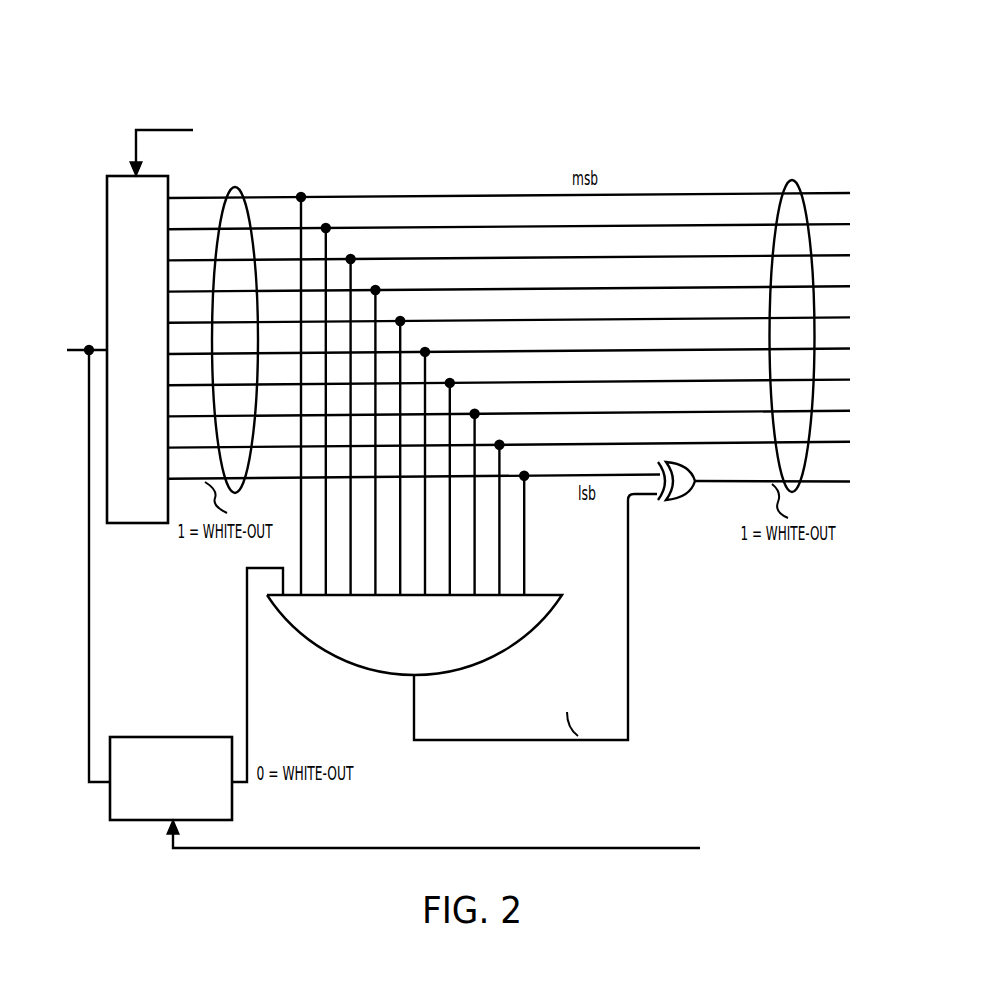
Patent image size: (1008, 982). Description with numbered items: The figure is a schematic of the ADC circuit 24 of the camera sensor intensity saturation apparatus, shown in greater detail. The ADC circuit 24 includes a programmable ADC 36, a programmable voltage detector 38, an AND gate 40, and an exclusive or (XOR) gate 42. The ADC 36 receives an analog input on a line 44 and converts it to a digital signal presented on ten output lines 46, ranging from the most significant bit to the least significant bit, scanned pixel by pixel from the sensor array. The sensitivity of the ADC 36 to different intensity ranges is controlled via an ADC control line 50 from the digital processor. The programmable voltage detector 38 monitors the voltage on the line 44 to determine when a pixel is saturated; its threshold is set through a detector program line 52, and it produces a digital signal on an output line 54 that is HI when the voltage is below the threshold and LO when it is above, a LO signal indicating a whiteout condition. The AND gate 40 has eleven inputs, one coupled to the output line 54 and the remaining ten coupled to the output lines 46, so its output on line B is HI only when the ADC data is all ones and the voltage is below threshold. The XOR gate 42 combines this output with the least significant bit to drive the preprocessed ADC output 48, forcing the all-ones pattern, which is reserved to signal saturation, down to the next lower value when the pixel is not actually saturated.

The ADC circuit 24 is at (612, 68).
The programmable ADC 36 is at (172, 188).
The programmable voltage detector 38 is at (235, 793).
The AND gate 40 is at (528, 625).
The exclusive or (XOR) gate 42 is at (688, 490).
The line 44 is at (80, 347).
The output lines 46 is at (250, 202).
The preprocessed ADC output 48 is at (790, 177).
The ADC control line 50 is at (160, 130).
The detector program line 52 is at (457, 846).
The output line 54 is at (248, 693).